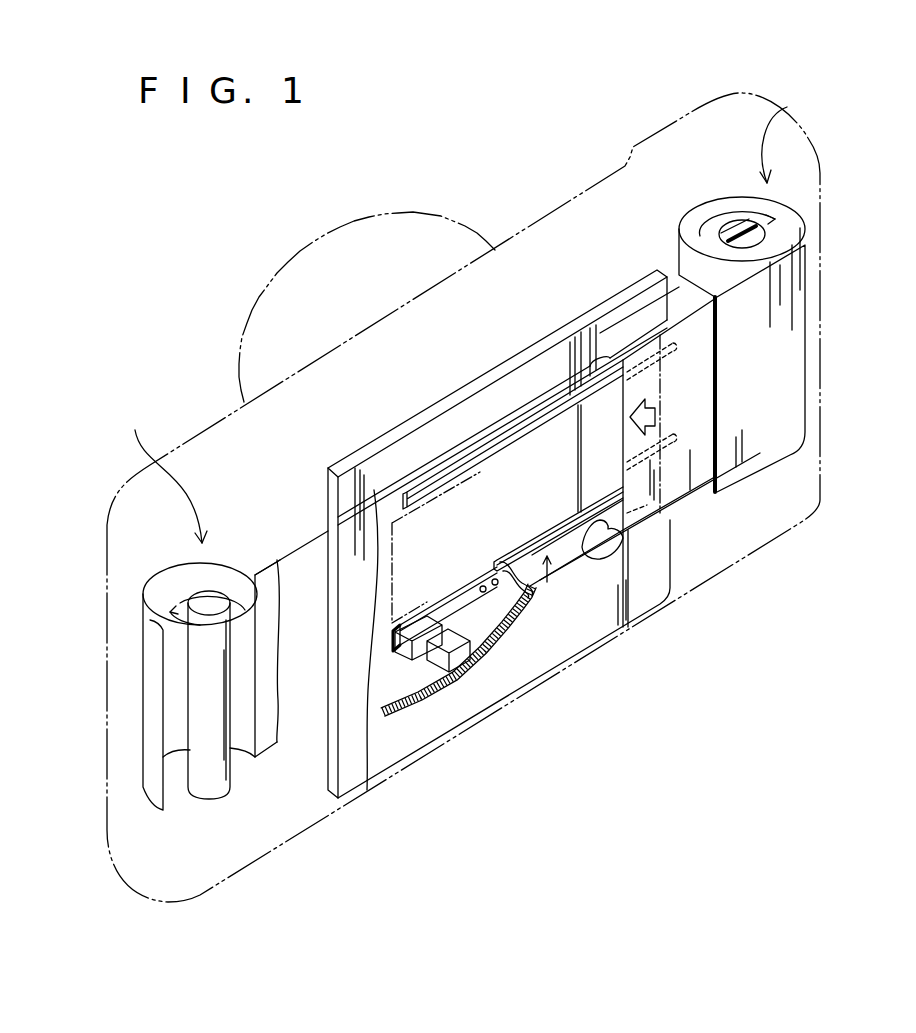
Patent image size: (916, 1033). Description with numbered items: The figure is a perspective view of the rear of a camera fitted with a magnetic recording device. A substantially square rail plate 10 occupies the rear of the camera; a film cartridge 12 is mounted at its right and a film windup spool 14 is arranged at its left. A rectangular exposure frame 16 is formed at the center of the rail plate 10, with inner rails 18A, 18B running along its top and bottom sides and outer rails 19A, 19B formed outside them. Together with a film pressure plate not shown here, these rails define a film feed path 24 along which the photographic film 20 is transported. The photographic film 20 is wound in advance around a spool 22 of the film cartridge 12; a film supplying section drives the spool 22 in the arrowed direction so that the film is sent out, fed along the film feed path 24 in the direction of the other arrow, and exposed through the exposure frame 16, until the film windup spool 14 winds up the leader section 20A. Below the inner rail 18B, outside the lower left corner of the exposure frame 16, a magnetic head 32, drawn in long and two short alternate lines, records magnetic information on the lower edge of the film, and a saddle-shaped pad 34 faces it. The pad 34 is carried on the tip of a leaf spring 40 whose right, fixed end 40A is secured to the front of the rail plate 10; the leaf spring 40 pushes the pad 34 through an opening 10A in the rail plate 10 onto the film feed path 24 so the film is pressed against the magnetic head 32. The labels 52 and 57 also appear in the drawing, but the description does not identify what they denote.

The rail plate 10 is at (659, 591).
The opening 10A is at (405, 720).
The film cartridge 12 is at (773, 257).
The film windup spool 14 is at (200, 597).
The exposure frame 16 is at (527, 522).
The inner rail 18A is at (507, 445).
The inner rail 18B is at (570, 528).
The outer rail 19A is at (547, 403).
The outer rail 19B is at (553, 550).
The photographic film 20 is at (693, 360).
The leader section 20A is at (677, 440).
The spool 22 is at (757, 239).
The film feed path 24 is at (560, 565).
The magnetic head 32 is at (455, 660).
The saddle-shaped pad 34 is at (403, 653).
The leaf spring 40 is at (487, 600).
The fixed end 40A is at (527, 590).
The cartridge rotation direction 52 is at (787, 107).
The spool rotation direction 57 is at (161, 473).